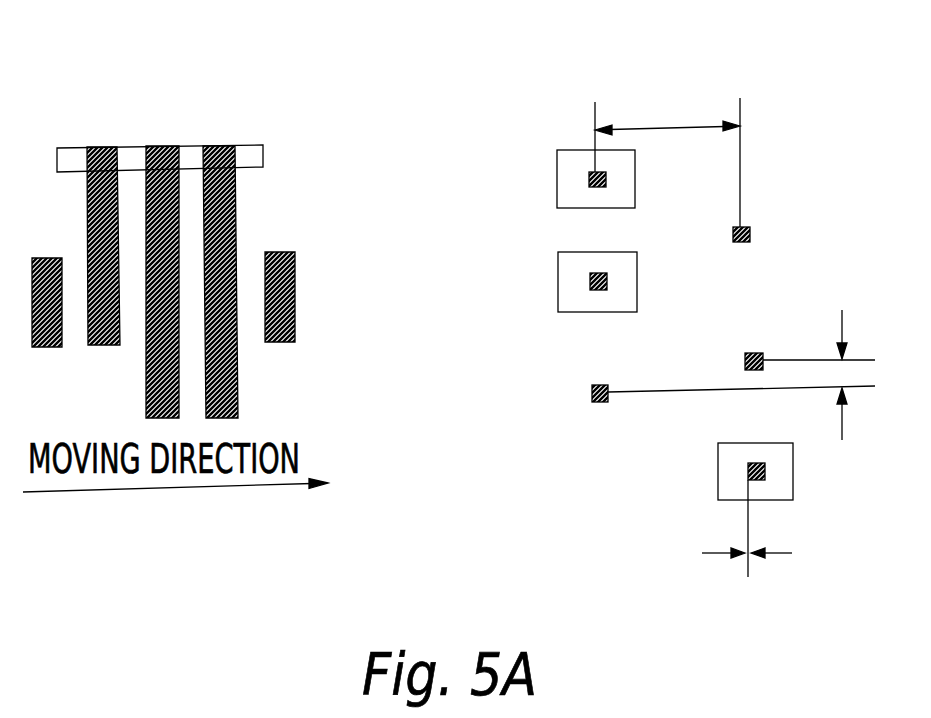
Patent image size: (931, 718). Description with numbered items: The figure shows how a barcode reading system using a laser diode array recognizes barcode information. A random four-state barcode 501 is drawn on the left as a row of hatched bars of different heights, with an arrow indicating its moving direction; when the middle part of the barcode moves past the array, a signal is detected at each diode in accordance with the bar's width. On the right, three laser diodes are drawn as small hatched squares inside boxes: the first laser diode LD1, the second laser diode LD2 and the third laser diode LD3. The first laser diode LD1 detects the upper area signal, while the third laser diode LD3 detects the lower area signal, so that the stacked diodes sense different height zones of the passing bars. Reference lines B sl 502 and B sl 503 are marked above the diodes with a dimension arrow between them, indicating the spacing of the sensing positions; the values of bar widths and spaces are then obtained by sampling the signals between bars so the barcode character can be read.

The four-state barcode 501 is at (165, 217).
The bar sensing line B sl 502 is at (597, 93).
The bar sensing line B sl 503 is at (749, 128).
The first laser diode LD1 is at (627, 179).
The second laser diode LD2 is at (629, 282).
The third laser diode LD3 is at (722, 510).